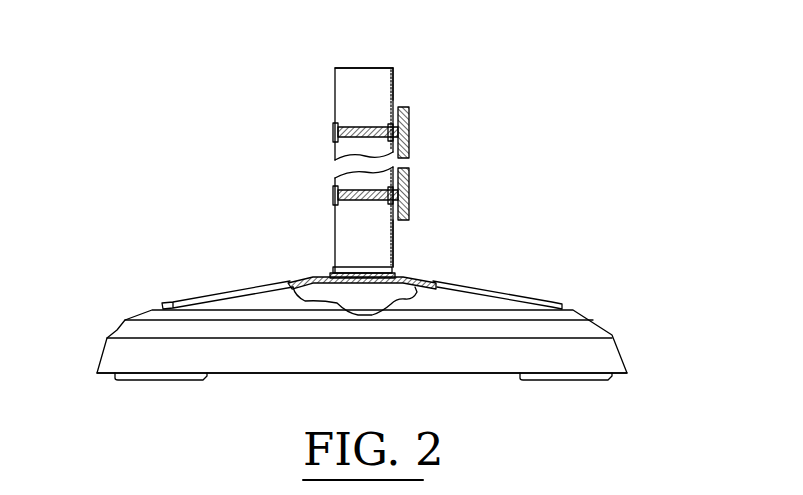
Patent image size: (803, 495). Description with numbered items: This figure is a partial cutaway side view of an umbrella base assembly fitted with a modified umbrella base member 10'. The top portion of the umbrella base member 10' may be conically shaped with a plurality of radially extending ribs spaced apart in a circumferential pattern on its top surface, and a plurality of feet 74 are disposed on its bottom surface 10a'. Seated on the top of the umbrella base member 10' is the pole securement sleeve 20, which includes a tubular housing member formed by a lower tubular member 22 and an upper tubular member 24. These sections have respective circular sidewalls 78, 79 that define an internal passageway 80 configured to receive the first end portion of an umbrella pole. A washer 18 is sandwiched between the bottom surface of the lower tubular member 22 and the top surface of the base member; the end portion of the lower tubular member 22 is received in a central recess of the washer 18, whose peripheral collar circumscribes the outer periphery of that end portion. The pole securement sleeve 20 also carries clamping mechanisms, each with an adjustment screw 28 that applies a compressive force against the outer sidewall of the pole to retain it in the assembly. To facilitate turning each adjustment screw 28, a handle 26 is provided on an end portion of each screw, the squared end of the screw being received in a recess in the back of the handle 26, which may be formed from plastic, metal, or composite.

The umbrella base member 10' is at (404, 344).
The bottom surface 10a' is at (362, 399).
The feet 74 is at (143, 381).
The pole securement sleeve 20 is at (483, 65).
The washer 18 is at (395, 276).
The upper tubular member 24 is at (347, 100).
The lower tubular member 22 is at (352, 250).
The internal passageway 80 is at (365, 80).
The circular sidewall 79 is at (394, 77).
The circular sidewall 78 is at (394, 238).
The handle 26 is at (411, 132).
The adjustment screw 28 is at (353, 141).